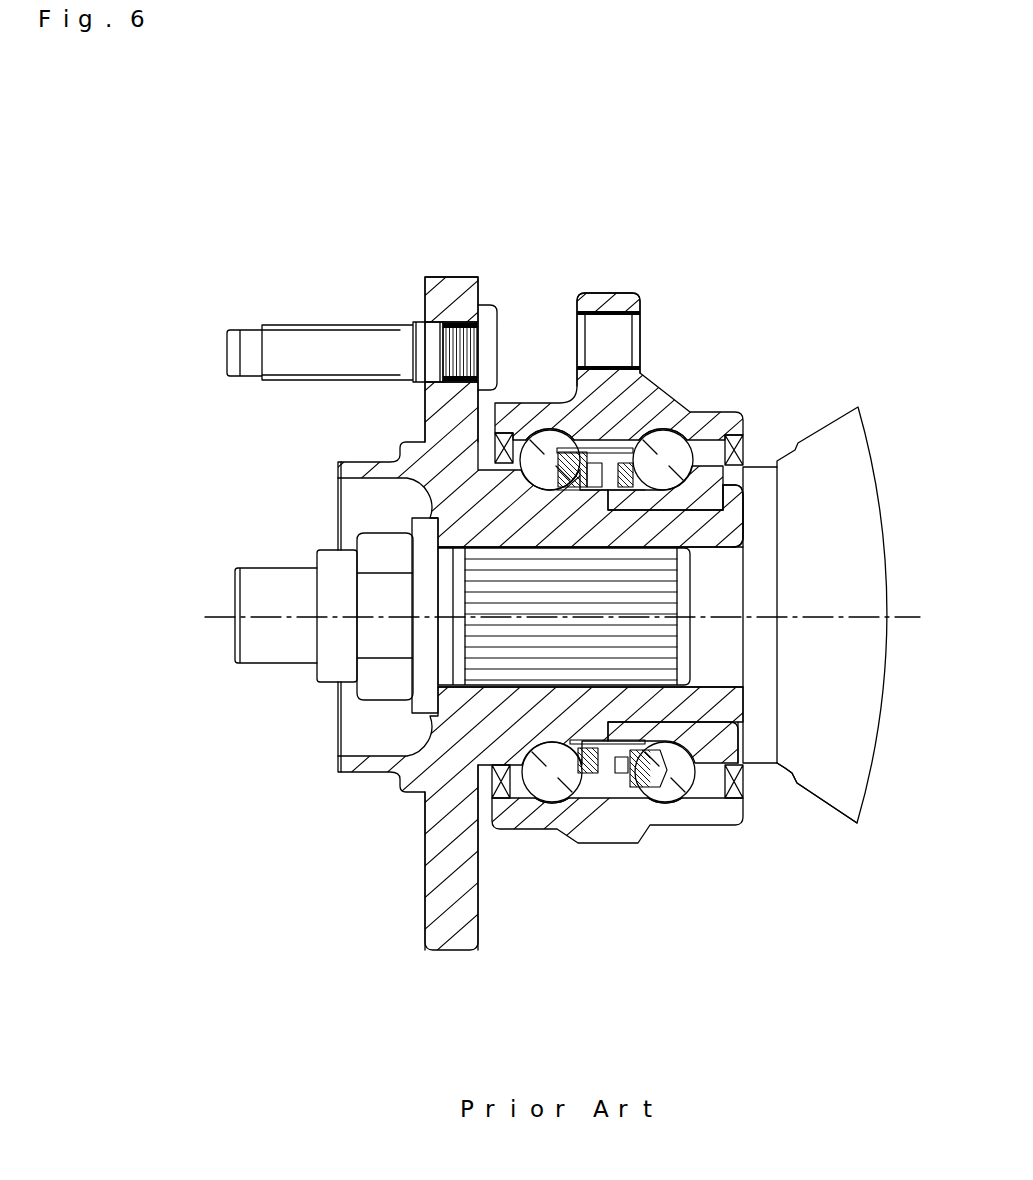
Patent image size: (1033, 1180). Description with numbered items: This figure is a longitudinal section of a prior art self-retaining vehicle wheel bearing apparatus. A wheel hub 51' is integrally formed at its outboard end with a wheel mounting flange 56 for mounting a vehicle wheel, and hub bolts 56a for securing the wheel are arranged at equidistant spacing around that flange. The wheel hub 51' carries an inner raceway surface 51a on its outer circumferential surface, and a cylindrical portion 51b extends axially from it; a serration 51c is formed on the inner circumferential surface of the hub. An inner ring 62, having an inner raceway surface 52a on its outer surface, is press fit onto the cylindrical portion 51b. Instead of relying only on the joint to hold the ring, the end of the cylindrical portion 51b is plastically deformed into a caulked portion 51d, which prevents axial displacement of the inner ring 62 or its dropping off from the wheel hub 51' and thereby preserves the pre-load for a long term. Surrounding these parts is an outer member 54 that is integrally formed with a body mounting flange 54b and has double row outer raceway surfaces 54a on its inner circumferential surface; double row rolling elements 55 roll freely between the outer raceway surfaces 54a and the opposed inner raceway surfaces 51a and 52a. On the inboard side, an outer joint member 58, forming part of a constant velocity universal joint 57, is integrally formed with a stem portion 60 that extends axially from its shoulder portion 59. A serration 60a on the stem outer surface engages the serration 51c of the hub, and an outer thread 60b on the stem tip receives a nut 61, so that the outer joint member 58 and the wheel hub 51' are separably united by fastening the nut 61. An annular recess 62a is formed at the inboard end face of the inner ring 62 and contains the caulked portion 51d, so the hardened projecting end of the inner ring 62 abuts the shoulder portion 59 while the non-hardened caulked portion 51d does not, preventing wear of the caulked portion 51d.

The wheel hub 51' is at (516, 615).
The inner raceway surface 51a is at (505, 437).
The cylindrical portion 51b is at (735, 525).
The serration 51c is at (505, 598).
The caulked portion 51d is at (727, 518).
The inner raceway surface 52a is at (692, 495).
The outer member 54 is at (585, 400).
The outer raceway surfaces 54a is at (540, 436).
The body mounting flange 54b is at (627, 303).
The rolling elements 55 is at (665, 797).
The wheel mounting flange 56 is at (452, 300).
The hub bolts 56a is at (328, 345).
The constant velocity universal joint 57 is at (866, 438).
The outer joint member 58 is at (825, 767).
The shoulder portion 59 is at (765, 747).
The stem portion 60 is at (709, 635).
The serration 60a is at (427, 795).
The outer thread 60b is at (287, 657).
The nut 61 is at (385, 680).
The inner ring 62 is at (738, 458).
The annular recess 62a is at (745, 740).